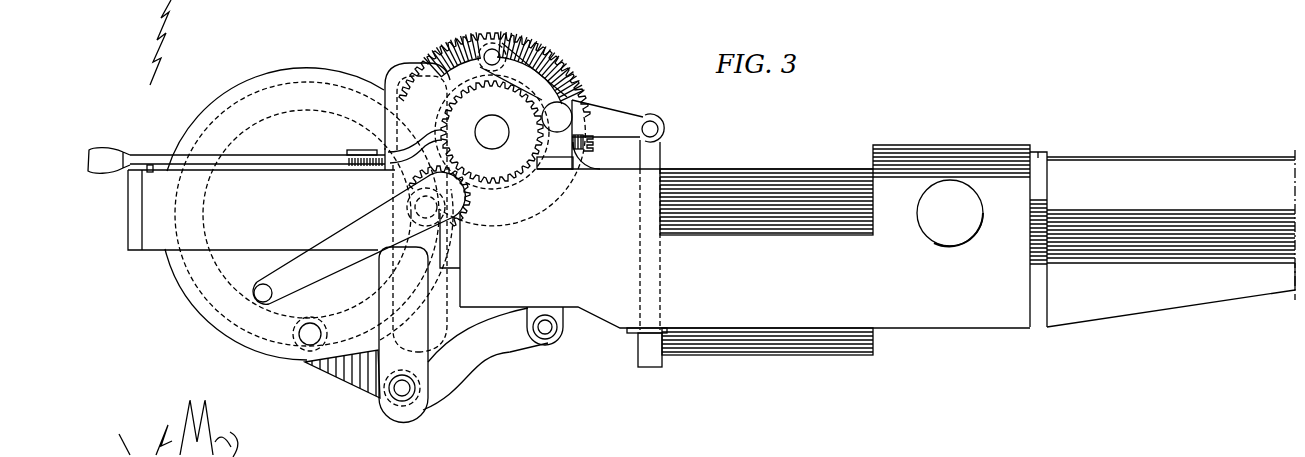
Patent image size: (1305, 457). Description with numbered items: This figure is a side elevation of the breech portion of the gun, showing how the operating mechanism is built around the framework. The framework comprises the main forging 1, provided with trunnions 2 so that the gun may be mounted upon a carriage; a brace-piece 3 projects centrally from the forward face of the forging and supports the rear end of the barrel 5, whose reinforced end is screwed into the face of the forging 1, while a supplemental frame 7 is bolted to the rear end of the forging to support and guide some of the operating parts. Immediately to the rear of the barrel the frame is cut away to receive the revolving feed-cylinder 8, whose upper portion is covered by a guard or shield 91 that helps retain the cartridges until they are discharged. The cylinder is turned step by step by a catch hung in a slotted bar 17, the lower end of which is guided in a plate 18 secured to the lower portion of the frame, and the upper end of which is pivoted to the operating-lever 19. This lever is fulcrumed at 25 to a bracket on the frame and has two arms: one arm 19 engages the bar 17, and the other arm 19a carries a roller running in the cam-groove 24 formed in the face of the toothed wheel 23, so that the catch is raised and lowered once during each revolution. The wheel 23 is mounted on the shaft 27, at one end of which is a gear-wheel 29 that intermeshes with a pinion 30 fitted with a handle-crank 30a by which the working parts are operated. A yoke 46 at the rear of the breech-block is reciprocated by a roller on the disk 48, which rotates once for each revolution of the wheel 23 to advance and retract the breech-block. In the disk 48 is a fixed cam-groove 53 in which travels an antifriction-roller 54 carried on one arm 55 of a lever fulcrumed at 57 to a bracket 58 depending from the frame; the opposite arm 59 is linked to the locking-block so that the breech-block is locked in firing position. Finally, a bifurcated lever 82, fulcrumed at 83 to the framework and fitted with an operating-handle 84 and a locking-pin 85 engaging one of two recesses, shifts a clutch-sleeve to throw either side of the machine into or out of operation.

The main forging 1 is at (753, 214).
The trunnions 2 is at (950, 213).
The brace-piece 3 is at (1171, 295).
The barrel 5 is at (1162, 225).
The supplemental frame 7 is at (128, 204).
The feed-cylinder 8 is at (766, 355).
The slotted bar 17 is at (661, 140).
The plate 18 is at (630, 333).
The operating-lever 19 is at (619, 114).
The arm of operating-lever 19a is at (518, 60).
The toothed wheel 23 is at (494, 121).
The cam-groove 24 is at (567, 72).
The fulcrum 25 is at (572, 105).
The shaft 27 is at (492, 132).
The gear-wheel 29 is at (492, 132).
The pinion 30 is at (465, 208).
The handle-crank 30a is at (359, 238).
The yoke 46 is at (399, 74).
The disk 48 is at (212, 108).
The cam-groove 53 is at (305, 214).
The antifriction-roller 54 is at (310, 334).
The arm of lever 55 is at (342, 385).
The fulcrum 57 is at (402, 388).
The bracket 58 is at (402, 411).
The arm of lever 59 is at (493, 358).
The bifurcated lever 82 is at (263, 153).
The fulcrum 83 is at (362, 166).
The operating-handle 84 is at (103, 148).
The locking-pin 85 is at (150, 165).
The guard or shield 91 is at (800, 168).